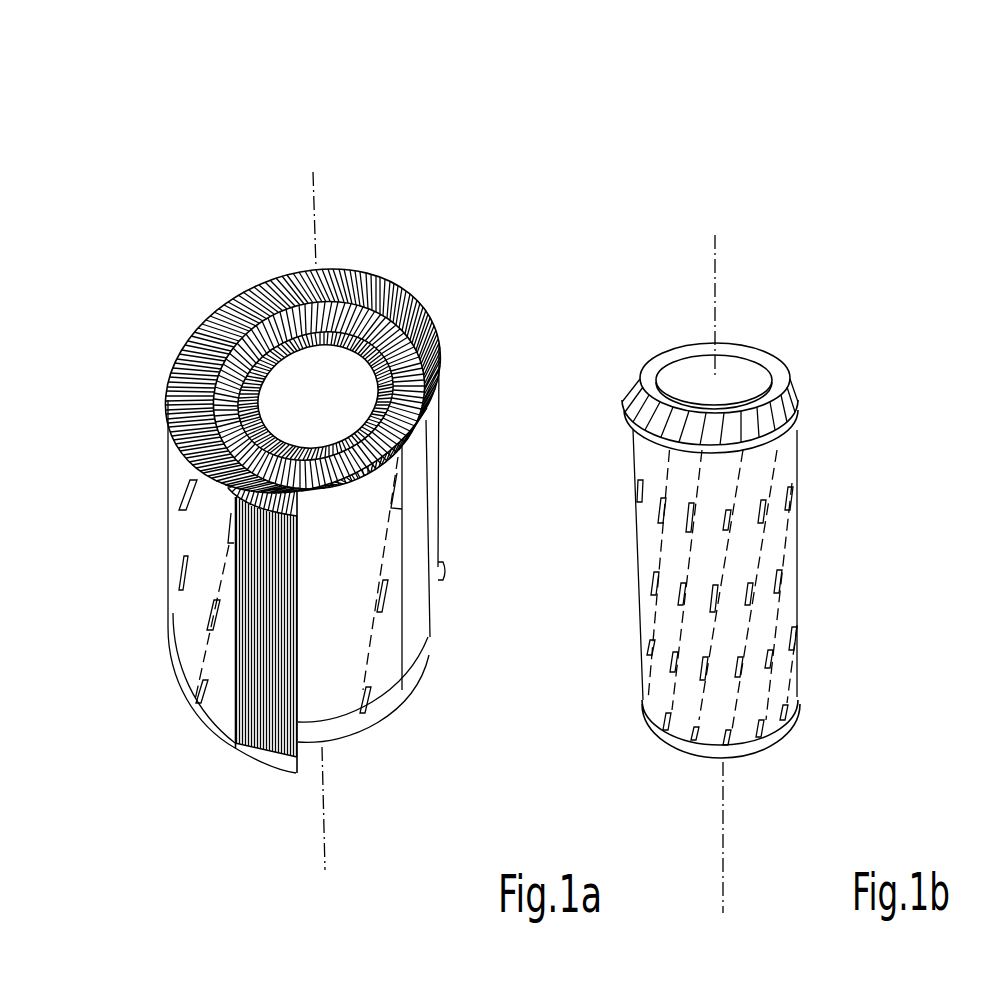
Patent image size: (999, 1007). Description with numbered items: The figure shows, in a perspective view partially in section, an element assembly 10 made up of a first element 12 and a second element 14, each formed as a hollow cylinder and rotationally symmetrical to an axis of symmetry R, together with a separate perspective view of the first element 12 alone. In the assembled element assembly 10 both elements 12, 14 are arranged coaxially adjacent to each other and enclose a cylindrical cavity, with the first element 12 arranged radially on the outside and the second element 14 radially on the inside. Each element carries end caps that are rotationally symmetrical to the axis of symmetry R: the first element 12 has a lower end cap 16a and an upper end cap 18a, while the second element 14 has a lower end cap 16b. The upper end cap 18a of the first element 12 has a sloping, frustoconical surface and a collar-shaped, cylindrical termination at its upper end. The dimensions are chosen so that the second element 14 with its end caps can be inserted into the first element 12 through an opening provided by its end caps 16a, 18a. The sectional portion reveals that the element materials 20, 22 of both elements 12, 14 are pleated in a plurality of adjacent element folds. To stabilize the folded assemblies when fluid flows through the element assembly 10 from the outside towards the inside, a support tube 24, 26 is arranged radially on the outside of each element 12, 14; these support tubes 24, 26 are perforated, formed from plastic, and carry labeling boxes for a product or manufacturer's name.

In FIG. 1a, the element assembly 10 is at (233, 213).
In FIG. 1a, the first element 12 is at (184, 506).
In FIG. 1b, the first element 12 is at (756, 341).
In FIG. 1a, the second element 14 is at (369, 627).
In FIG. 1a, the lower end cap 16a is at (255, 755).
In FIG. 1b, the lower end cap 16a is at (760, 750).
In FIG. 1a, the lower end cap 16b is at (377, 718).
In FIG. 1b, the upper end cap 18a is at (798, 386).
In FIG. 1a, the element material 20 is at (262, 697).
In FIG. 1a, the element material 22 is at (396, 426).
In FIG. 1a, the support tube 24 is at (208, 610).
In FIG. 1b, the support tube 24 is at (663, 547).
In FIG. 1a, the support tube 26 is at (373, 542).
In FIG. 1a, the axis of symmetry R is at (325, 830).
In FIG. 1b, the axis of symmetry R is at (725, 857).